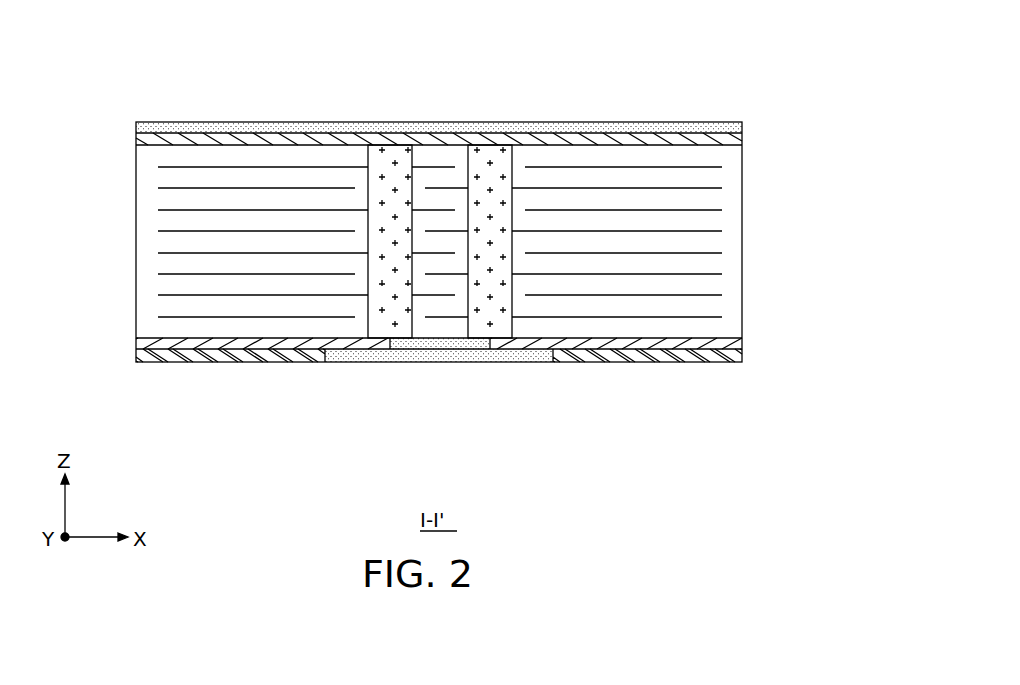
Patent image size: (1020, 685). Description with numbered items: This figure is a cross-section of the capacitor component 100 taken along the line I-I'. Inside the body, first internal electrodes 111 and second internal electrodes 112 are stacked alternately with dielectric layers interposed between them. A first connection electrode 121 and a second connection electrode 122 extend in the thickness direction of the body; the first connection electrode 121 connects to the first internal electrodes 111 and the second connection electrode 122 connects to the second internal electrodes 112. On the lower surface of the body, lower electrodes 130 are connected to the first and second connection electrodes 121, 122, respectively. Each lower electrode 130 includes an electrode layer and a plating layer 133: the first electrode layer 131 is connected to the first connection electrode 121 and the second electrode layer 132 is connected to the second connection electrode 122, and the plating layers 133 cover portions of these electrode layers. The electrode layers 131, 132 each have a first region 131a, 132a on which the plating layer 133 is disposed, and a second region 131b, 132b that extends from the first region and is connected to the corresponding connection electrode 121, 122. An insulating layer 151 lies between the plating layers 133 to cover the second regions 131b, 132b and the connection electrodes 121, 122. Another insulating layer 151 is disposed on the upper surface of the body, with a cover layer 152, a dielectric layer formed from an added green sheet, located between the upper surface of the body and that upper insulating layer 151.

The capacitor component 100 is at (604, 65).
The first internal electrode 111 is at (172, 166).
The second internal electrode 112 is at (172, 230).
The first connection electrode 121 is at (395, 163).
The second connection electrode 122 is at (493, 163).
The lower electrode 130 is at (347, 463).
The first electrode layer 131 is at (397, 420).
The first region of first electrode layer 131a is at (282, 353).
The second region of first electrode layer 131b is at (372, 353).
The second electrode layer 132 is at (627, 419).
The first region of second electrode layer 132a is at (602, 350).
The second region of second electrode layer 132b is at (517, 350).
The plating layer 133 is at (232, 362).
The insulating layer 151 is at (743, 130).
The cover layer 152 is at (739, 137).